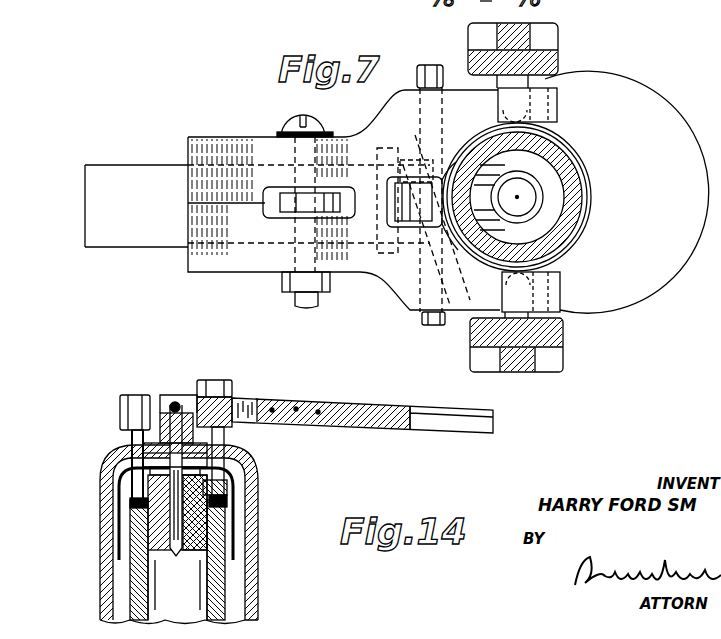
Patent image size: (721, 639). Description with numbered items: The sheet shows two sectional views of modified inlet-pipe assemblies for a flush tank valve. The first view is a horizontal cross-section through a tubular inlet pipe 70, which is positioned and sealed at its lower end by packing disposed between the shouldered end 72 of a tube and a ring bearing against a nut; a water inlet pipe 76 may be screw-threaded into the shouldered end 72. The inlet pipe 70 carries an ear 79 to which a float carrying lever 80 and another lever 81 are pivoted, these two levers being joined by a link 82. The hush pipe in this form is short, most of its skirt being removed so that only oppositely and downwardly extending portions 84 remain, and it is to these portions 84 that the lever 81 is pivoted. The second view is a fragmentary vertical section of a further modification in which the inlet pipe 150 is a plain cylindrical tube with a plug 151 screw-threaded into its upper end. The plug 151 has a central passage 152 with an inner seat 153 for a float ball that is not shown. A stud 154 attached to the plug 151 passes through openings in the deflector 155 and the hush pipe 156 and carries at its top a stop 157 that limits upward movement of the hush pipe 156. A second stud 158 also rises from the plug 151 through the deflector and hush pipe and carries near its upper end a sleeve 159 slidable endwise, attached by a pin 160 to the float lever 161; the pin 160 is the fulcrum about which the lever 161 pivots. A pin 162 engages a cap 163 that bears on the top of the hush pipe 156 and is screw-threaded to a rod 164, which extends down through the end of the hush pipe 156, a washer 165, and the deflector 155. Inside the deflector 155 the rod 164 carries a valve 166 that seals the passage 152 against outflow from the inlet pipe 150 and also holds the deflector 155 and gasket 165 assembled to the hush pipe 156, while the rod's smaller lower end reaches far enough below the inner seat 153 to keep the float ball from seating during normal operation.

In FIG. 7, the inlet pipe 70 is at (592, 150).
In FIG. 7, the shouldered end 72 is at (545, 165).
In FIG. 7, the water inlet pipe 76 is at (540, 205).
In FIG. 7, the ear 79 is at (415, 210).
In FIG. 7, the float carrying lever 80 is at (150, 186).
In FIG. 7, the lever 81 is at (243, 152).
In FIG. 7, the link 82 is at (296, 205).
In FIG. 7, the downwardly extending portions 84 is at (558, 52).
In FIG. 14, the inlet pipe 150 is at (140, 585).
In FIG. 14, the plug 151 is at (226, 506).
In FIG. 14, the central passage 152 is at (226, 521).
In FIG. 14, the inner seat 153 is at (200, 545).
In FIG. 14, the stud 154 is at (133, 440).
In FIG. 14, the deflector 155 is at (240, 470).
In FIG. 14, the hush pipe 156 is at (112, 502).
In FIG. 14, the stop 157 is at (122, 413).
In FIG. 14, the stud 158 is at (230, 430).
In FIG. 14, the sleeve 159 is at (240, 398).
In FIG. 14, the pin 160 is at (215, 385).
In FIG. 14, the float lever 161 is at (302, 400).
In FIG. 14, the pin 162 is at (172, 403).
In FIG. 14, the cap 163 is at (160, 405).
In FIG. 14, the rod 164 is at (178, 522).
In FIG. 14, the washer 165 is at (112, 470).
In FIG. 14, the valve 166 is at (117, 484).